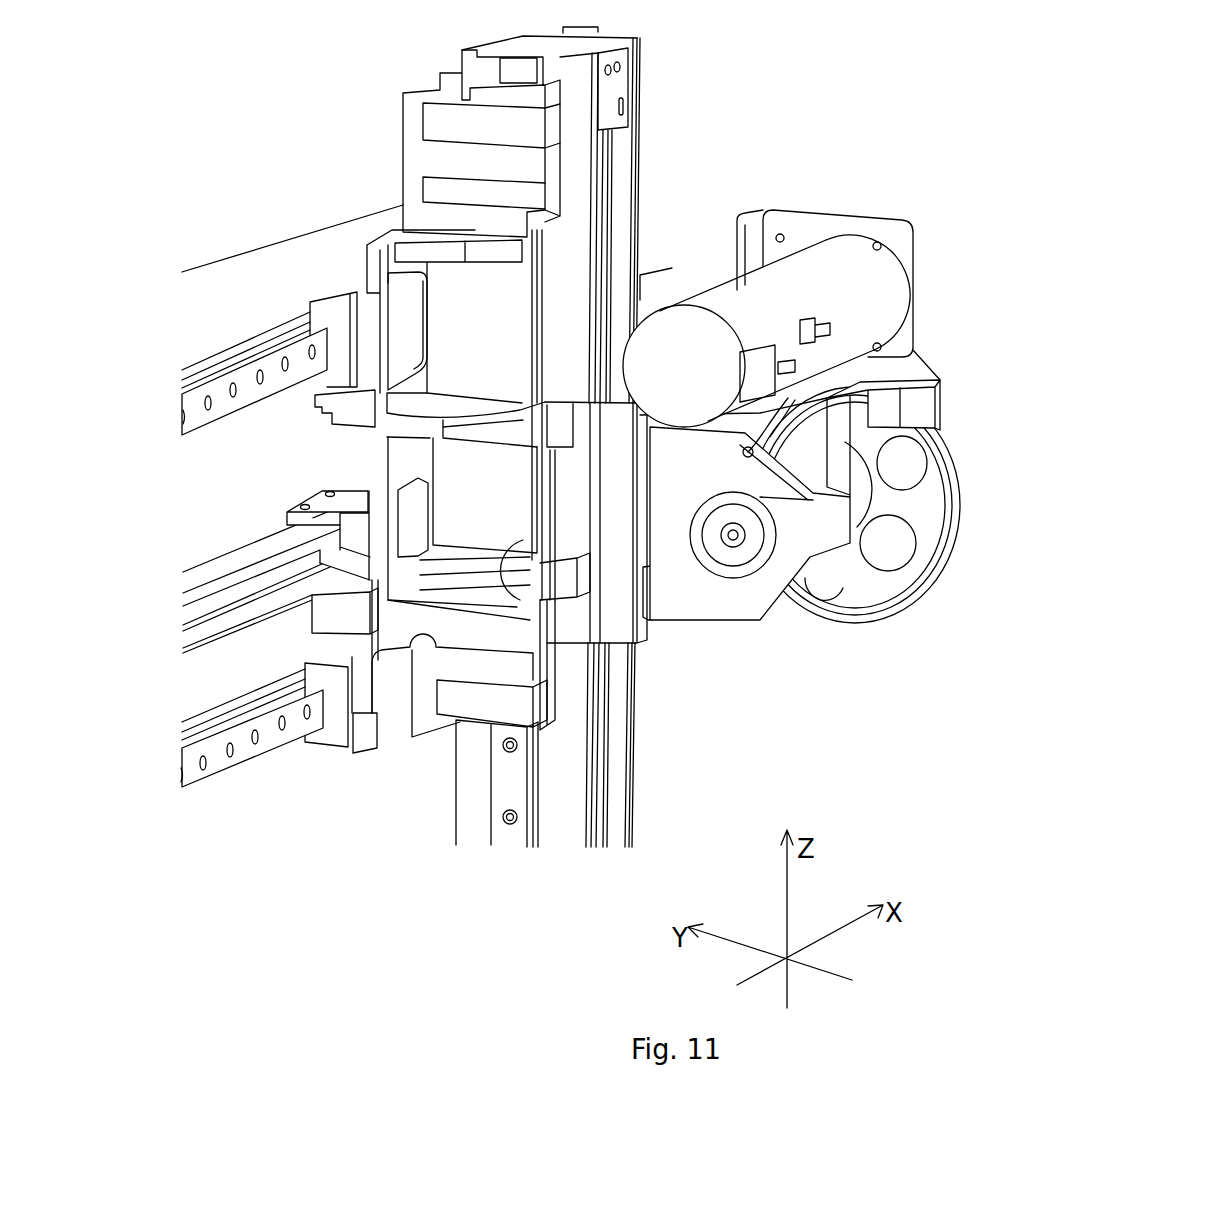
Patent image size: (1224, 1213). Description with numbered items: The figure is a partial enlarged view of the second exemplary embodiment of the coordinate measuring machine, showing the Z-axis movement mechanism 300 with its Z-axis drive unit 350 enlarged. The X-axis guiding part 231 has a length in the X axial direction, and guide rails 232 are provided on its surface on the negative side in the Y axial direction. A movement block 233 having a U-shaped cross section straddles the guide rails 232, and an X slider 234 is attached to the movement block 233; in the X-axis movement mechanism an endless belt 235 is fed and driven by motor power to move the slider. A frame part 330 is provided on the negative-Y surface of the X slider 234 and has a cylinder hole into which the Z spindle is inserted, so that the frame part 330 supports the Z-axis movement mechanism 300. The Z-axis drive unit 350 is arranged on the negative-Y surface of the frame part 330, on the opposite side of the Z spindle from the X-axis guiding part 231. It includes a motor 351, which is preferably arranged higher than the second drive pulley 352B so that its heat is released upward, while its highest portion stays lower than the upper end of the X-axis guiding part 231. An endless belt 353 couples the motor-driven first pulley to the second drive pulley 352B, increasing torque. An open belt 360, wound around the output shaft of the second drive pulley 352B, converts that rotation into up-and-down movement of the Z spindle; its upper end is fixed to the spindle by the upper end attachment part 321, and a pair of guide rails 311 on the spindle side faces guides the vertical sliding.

The X-axis guiding part 231 is at (340, 222).
The guide rails 232 is at (190, 418).
The movement block 233 is at (337, 296).
The X slider 234 is at (357, 369).
The endless belt 235 is at (290, 545).
The Z-axis movement mechanism 300 is at (670, 496).
The guide rails 311 is at (507, 792).
The upper end attachment part 321 is at (615, 85).
The frame part 330 is at (518, 598).
The Z-axis drive unit 350 is at (886, 198).
The motor 351 is at (802, 275).
The second drive pulley 352B is at (860, 608).
The endless belt 353 is at (943, 432).
The open belt 360 is at (607, 157).